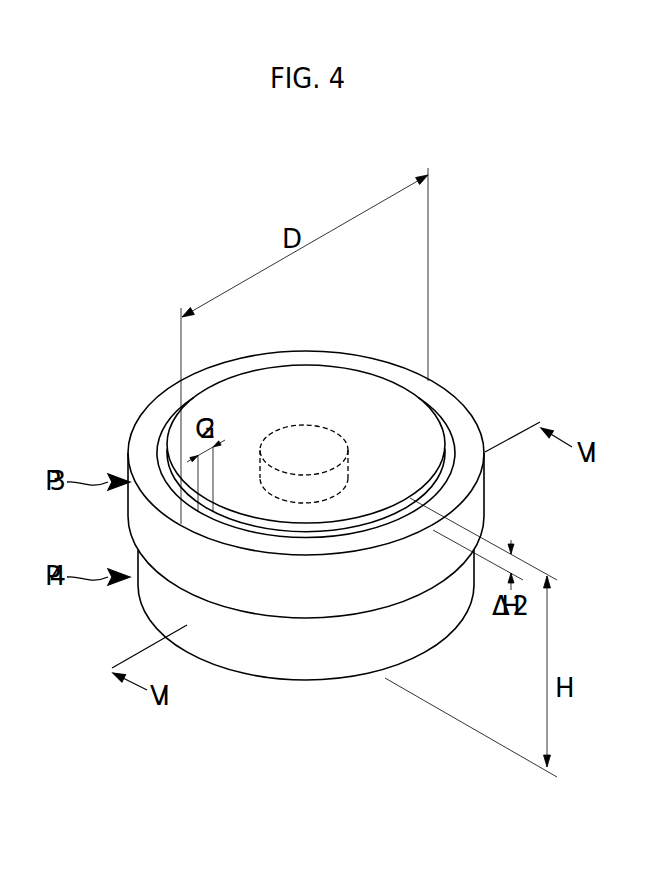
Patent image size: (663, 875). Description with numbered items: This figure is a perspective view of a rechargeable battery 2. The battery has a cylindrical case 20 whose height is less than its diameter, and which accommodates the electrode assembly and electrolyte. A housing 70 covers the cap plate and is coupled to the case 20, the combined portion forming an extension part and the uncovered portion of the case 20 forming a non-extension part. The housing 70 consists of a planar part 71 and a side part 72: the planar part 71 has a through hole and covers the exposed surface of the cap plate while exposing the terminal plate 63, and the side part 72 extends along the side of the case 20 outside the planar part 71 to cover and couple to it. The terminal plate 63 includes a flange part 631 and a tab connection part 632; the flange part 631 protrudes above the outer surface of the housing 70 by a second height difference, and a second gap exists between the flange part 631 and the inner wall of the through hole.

The rechargeable battery 2 is at (314, 195).
The case 20 is at (296, 681).
The terminal plate 63 is at (388, 298).
The flange part 631 is at (367, 390).
The tab connection part 632 is at (307, 437).
The housing 70 is at (532, 470).
The planar part 71 is at (465, 473).
The side part 72 is at (468, 516).